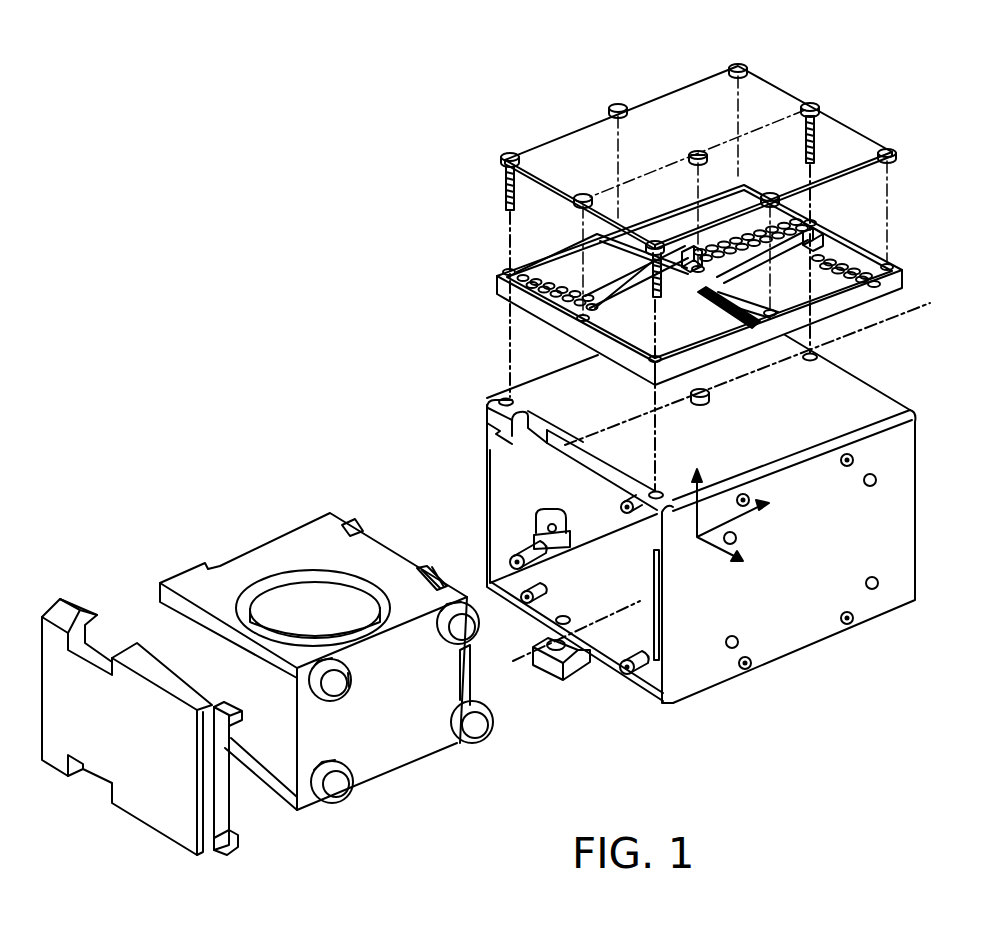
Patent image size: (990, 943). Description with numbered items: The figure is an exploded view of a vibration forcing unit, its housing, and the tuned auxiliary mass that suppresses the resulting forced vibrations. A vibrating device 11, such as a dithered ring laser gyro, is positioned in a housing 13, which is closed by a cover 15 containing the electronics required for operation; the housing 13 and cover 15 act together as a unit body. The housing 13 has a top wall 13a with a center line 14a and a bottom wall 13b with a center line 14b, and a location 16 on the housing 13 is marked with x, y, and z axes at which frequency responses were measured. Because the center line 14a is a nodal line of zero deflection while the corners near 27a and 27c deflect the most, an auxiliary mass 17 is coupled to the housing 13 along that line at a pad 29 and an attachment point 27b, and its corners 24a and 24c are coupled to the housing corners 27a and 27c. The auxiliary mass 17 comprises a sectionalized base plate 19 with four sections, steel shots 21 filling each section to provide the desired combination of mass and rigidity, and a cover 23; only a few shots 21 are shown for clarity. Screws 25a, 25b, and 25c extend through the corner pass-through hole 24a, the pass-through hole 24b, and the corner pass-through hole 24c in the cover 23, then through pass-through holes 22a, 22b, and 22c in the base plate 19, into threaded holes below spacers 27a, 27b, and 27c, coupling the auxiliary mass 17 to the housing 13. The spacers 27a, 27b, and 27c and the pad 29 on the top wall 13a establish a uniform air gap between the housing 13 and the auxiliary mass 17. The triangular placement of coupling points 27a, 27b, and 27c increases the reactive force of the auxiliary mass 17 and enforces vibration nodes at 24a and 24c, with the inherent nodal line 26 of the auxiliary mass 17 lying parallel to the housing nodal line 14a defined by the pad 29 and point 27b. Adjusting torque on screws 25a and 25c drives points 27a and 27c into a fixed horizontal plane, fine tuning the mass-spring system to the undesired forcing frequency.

The vibrating device 11 is at (295, 553).
The housing 13 is at (838, 655).
The top wall 13a is at (850, 398).
The bottom wall 13b is at (623, 633).
The center line 14a is at (893, 322).
The center line 14b is at (577, 633).
The cover 15 is at (167, 792).
The location 16 is at (697, 545).
The auxiliary mass 17 is at (468, 257).
The sectionalized base plate 19 is at (527, 305).
The steel shots (BBs) 21 is at (567, 310).
The pass-through hole 22a is at (505, 270).
The pass-through hole 22b is at (815, 221).
The pass-through hole 22c is at (642, 372).
The cover 23 is at (757, 107).
The corner pass-through hole 24a is at (513, 152).
The pass-through hole 24b is at (810, 103).
The corner pass-through hole 24c is at (680, 218).
The screw 25a is at (504, 195).
The screw 25b is at (817, 143).
The screw 25c is at (650, 270).
The nodal line 26 is at (816, 105).
The spacer / attachment point 27a is at (502, 396).
The spacer / attachment point 27b is at (808, 362).
The spacer / attachment point 27c is at (653, 491).
The pad 29 is at (707, 402).